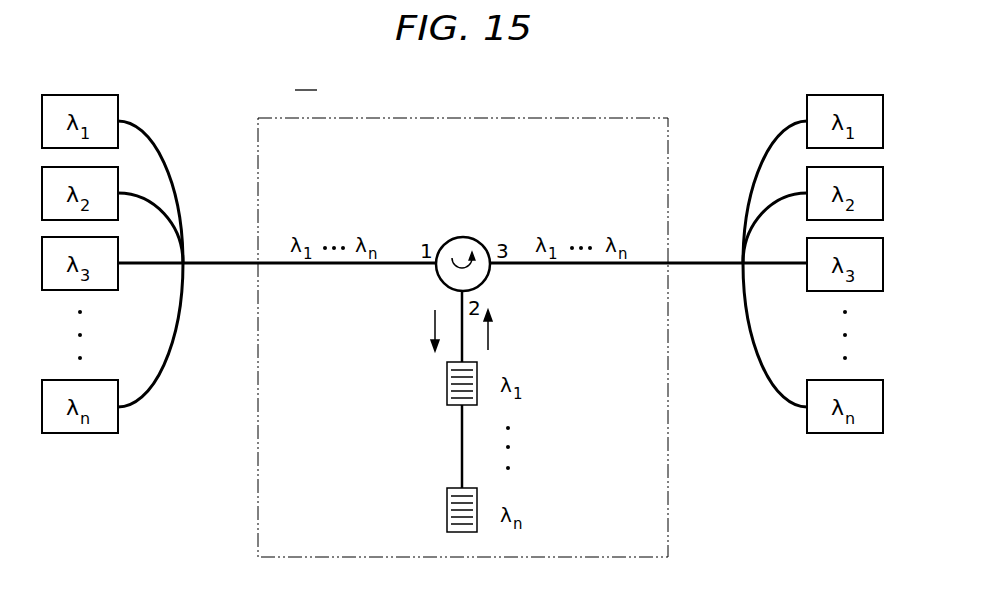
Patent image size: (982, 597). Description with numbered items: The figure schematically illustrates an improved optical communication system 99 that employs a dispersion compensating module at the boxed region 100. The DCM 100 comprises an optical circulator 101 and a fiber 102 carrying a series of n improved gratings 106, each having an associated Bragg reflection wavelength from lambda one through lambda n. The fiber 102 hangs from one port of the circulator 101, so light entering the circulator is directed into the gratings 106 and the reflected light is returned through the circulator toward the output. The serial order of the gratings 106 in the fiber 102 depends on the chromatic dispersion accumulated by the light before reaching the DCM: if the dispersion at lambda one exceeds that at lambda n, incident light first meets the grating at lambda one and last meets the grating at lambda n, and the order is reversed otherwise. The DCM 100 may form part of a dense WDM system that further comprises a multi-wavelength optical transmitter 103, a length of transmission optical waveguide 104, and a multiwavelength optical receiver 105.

The optical communication system 99 is at (307, 79).
The dispersion compensating module 100 is at (616, 118).
The optical circulator 101 is at (470, 238).
The fiber 102 is at (460, 356).
The multi-wavelength optical transmitter 103 is at (155, 143).
The transmission optical waveguide 104 is at (211, 262).
The multiwavelength optical receiver 105 is at (762, 380).
The gratings 106 is at (447, 392).